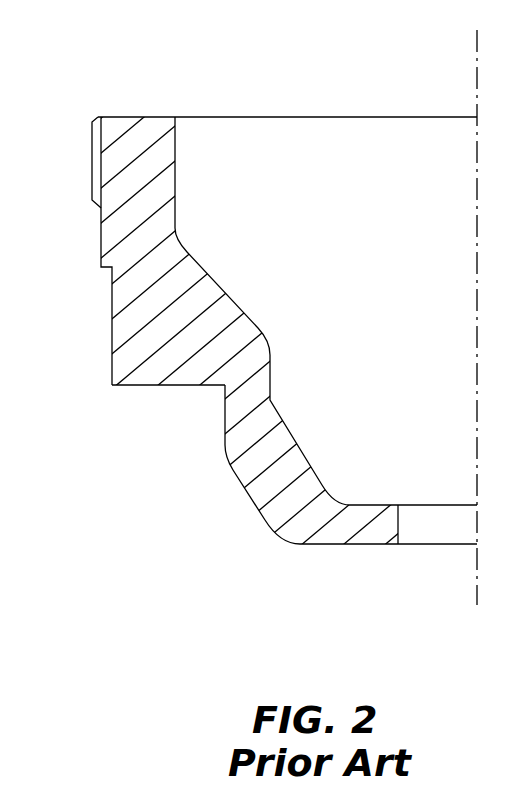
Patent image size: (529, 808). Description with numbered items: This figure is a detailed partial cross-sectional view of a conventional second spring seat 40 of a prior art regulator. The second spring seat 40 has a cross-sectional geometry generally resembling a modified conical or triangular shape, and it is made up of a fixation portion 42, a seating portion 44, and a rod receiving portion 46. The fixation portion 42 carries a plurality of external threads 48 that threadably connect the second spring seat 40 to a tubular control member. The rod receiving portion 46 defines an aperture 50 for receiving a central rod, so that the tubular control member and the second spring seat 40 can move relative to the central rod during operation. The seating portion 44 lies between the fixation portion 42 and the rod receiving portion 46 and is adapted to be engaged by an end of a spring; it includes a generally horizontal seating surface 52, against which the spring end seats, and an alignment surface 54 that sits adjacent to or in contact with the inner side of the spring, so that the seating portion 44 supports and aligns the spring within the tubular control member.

The second spring seat 40 is at (317, 118).
The fixation portion 42 is at (98, 240).
The seating portion 44 is at (177, 386).
The rod receiving portion 46 is at (340, 545).
The external threads 48 is at (96, 160).
The aperture 50 is at (442, 528).
The seating surface 52 is at (138, 387).
The alignment surface 54 is at (223, 437).